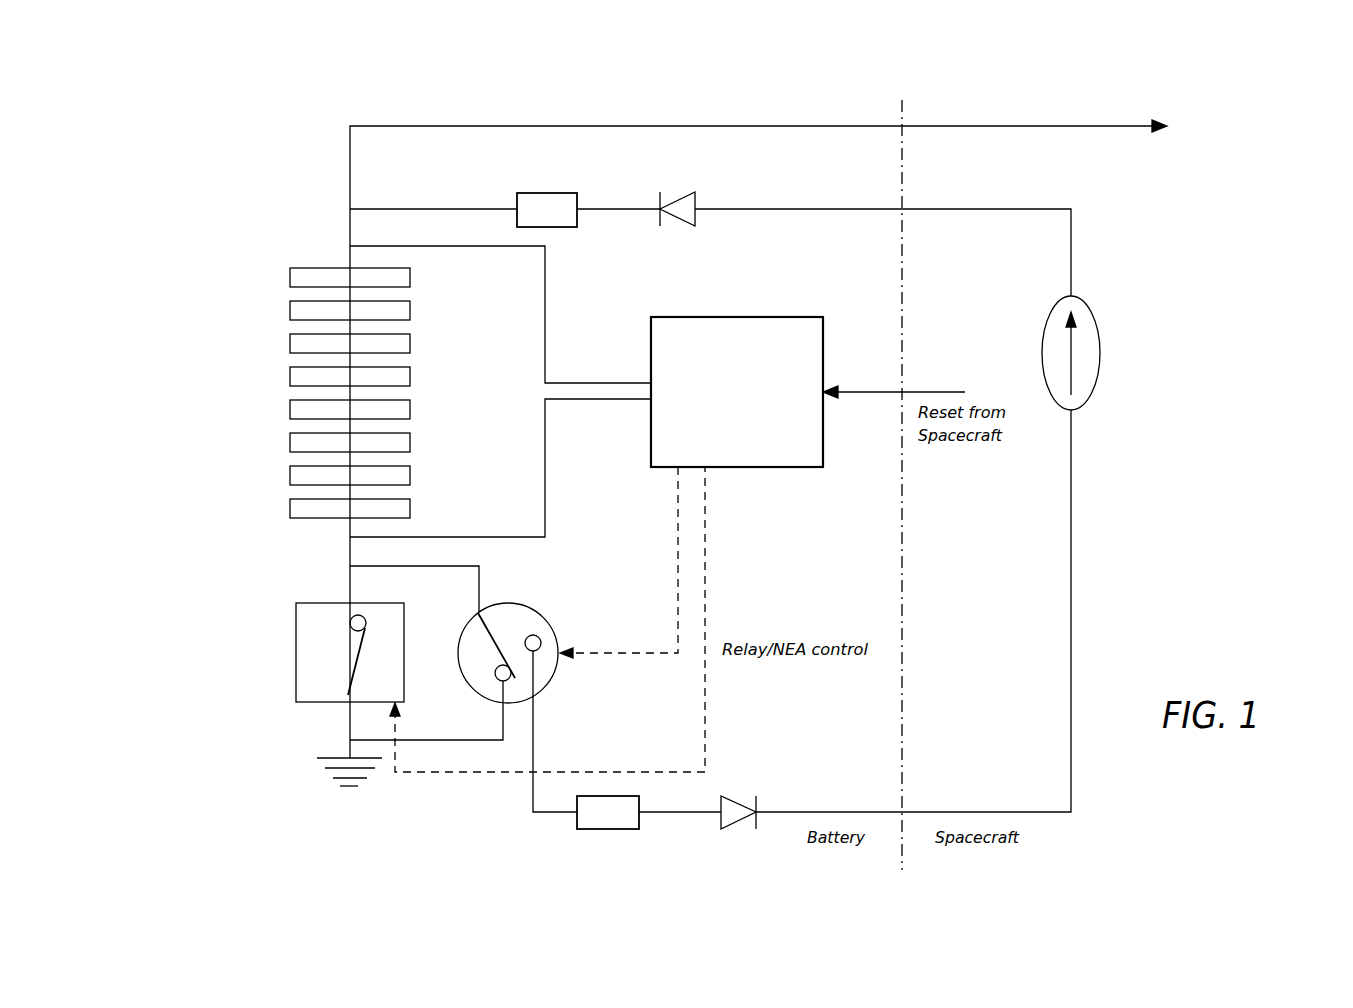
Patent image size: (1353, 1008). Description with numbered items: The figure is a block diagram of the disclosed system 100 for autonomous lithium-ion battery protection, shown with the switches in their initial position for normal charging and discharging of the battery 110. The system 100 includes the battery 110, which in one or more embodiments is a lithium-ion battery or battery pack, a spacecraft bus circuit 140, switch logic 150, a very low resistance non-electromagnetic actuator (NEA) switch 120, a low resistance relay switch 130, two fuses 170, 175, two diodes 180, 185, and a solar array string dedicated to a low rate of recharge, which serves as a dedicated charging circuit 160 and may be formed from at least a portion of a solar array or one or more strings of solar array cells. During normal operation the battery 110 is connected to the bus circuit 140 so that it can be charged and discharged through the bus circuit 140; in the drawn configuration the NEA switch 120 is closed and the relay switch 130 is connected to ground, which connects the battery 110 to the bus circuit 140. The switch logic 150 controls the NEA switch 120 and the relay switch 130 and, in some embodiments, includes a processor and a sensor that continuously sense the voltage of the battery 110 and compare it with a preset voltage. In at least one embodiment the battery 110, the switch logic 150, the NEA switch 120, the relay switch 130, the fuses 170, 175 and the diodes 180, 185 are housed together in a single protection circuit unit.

The system 100 is at (1145, 782).
The battery 110 is at (270, 265).
The very low resistance non-electromagnetic actuator (NEA) switch 120 is at (296, 680).
The low resistance relay switch 130 is at (506, 603).
The spacecraft bus 140 is at (1238, 112).
The switch logic 150 is at (770, 467).
The solar array string dedicated to a low rate of recharge 160 is at (1088, 303).
The fuse 170 is at (545, 193).
The fuse 175 is at (608, 829).
The diode 180 is at (677, 195).
The diode 185 is at (738, 829).